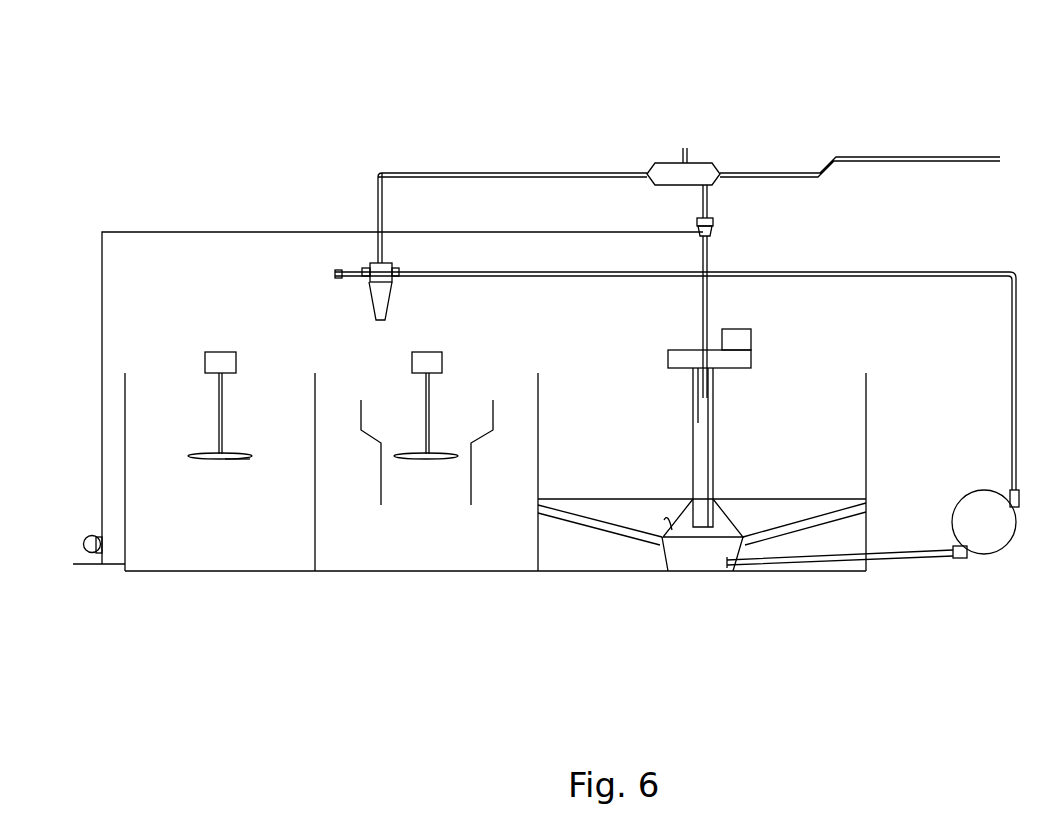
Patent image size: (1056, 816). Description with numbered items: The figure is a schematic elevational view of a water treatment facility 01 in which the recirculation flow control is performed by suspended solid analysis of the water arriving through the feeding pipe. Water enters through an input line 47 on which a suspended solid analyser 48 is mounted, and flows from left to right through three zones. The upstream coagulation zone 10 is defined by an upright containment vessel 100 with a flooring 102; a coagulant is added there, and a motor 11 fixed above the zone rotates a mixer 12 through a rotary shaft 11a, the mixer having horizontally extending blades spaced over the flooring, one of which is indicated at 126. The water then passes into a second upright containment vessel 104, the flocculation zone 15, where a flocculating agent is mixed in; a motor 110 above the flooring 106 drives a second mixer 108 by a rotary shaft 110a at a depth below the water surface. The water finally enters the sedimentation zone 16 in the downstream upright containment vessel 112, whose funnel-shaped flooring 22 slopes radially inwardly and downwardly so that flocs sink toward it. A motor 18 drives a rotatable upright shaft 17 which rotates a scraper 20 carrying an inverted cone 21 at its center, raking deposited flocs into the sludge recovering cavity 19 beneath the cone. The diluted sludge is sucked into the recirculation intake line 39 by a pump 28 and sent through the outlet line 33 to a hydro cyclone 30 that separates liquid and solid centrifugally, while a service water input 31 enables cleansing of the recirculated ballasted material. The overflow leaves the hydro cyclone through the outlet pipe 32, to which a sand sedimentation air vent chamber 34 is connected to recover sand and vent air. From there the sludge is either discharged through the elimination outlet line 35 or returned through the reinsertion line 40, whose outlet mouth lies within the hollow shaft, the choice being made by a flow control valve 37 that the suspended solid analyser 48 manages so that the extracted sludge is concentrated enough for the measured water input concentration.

The water treatment facility 01 is at (160, 184).
The coagulation zone 10 is at (192, 392).
The motor 11 is at (220, 362).
The rotary shaft 11a is at (220, 395).
The mixer 12 is at (198, 460).
The stirrer blade 126 is at (240, 460).
The flocculation zone 15 is at (337, 398).
The motor 110 is at (433, 360).
The rotary shaft 110a is at (429, 383).
The second mixer 108 is at (410, 460).
The sedimentation zone 16 is at (632, 428).
The motor 18 is at (770, 293).
The reinsertion line 40 is at (705, 376).
The rotatable upright shaft 17 is at (712, 415).
The sludge recovering cavity 19 is at (700, 563).
The scraper 20 is at (750, 540).
The inverted cone 21 is at (664, 520).
The funnel-shaped flooring 22 is at (626, 538).
The pump 28 is at (987, 537).
The hydro cyclone 30 is at (382, 293).
The service water input 31 is at (338, 270).
The outlet pipe 32 is at (472, 173).
The outlet line 33 is at (990, 277).
The sand sedimentation air vent chamber 34 is at (662, 182).
The elimination outlet line 35 is at (867, 157).
The flow control valve 37 is at (713, 227).
The recirculation intake line 39 is at (904, 559).
The input line 47 is at (115, 565).
The suspended solid analyser 48 is at (93, 553).
The upright containment vessel 100 is at (245, 574).
The flooring 102 is at (320, 600).
The second upright containment vessel 104 is at (398, 574).
The flooring 106 is at (470, 574).
The upright containment vessel 112 is at (614, 576).